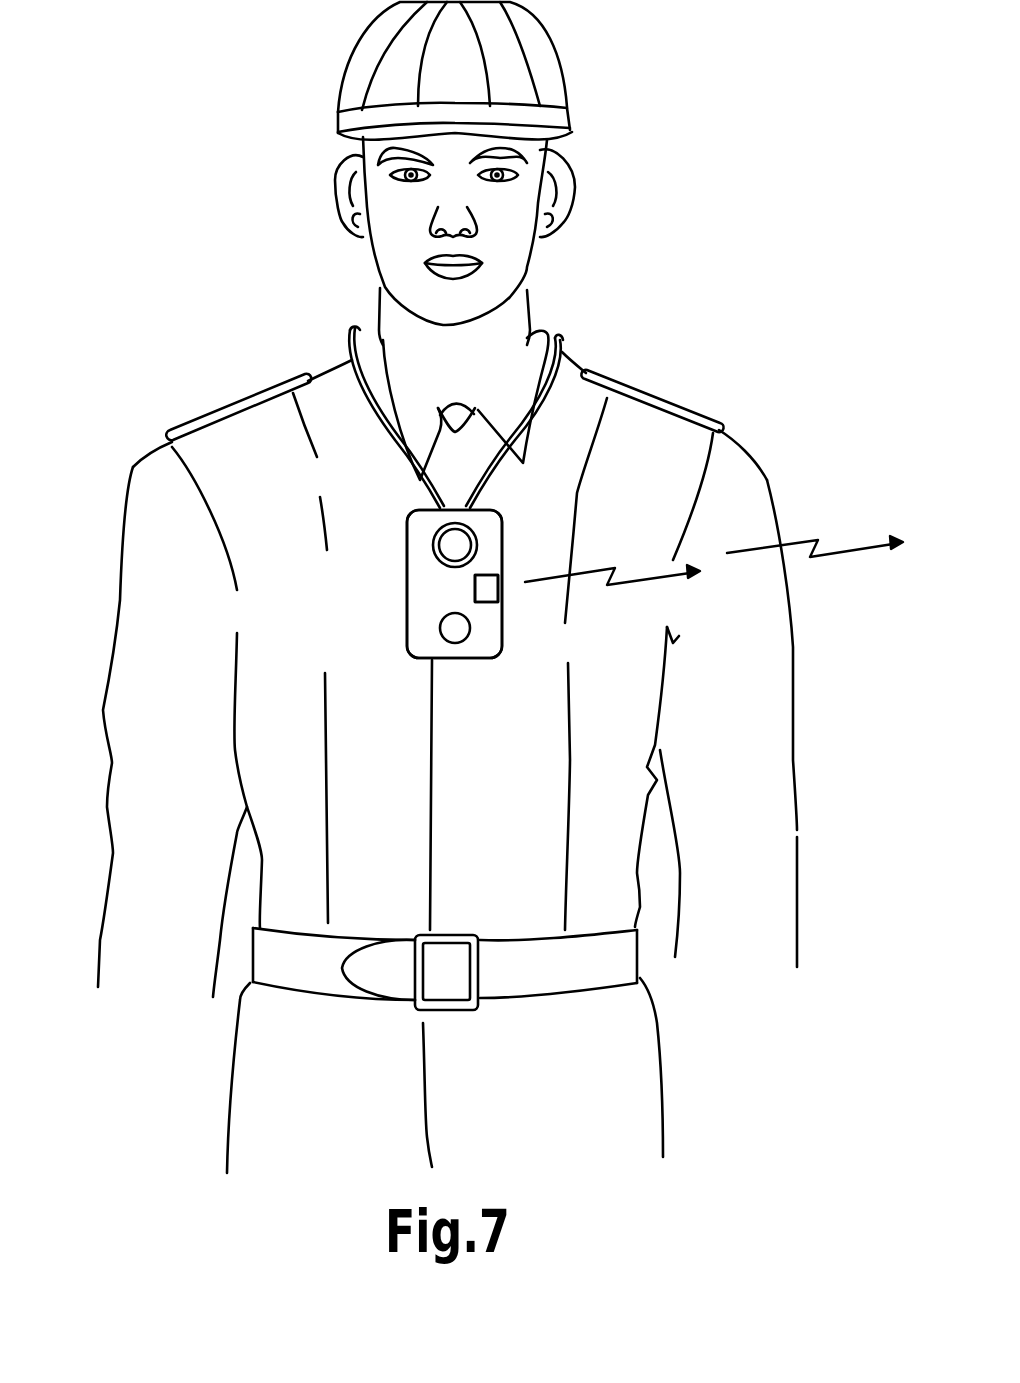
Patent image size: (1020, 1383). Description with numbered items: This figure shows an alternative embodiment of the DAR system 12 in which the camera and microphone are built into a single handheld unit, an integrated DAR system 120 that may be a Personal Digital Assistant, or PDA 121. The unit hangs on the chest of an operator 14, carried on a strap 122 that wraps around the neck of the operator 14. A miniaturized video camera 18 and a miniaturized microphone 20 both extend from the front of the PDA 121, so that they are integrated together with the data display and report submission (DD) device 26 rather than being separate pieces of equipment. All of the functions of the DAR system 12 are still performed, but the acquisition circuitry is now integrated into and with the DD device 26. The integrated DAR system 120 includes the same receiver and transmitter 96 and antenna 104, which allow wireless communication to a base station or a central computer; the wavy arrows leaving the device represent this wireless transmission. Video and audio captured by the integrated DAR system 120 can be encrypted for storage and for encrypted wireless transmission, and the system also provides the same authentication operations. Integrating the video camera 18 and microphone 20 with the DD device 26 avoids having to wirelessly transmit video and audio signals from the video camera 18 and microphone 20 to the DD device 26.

The DAR system 12 is at (722, 92).
The operator 14 is at (122, 595).
The video camera 18 is at (432, 547).
The microphone 20 is at (468, 645).
The data display and report submission (DD) device 26 is at (407, 638).
The receiver and transmitter 96 is at (561, 622).
The antenna 104 is at (483, 603).
The integrated DAR system 120 is at (405, 661).
The PDA 121 is at (433, 587).
The strap 122 is at (420, 477).